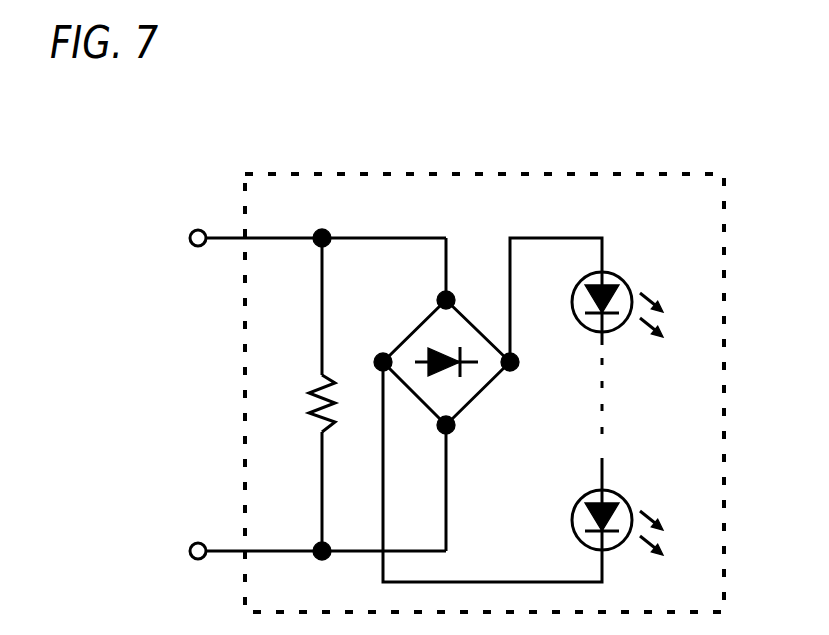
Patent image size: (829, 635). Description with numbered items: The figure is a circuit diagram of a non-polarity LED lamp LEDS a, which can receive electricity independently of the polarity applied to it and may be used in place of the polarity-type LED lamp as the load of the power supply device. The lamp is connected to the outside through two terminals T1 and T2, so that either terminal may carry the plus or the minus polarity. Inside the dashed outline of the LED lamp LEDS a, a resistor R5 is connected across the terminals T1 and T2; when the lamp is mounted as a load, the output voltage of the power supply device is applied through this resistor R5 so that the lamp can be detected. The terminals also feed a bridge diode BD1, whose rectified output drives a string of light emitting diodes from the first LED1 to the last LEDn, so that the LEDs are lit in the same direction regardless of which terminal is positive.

The first terminal T1 is at (295, 227).
The second terminal T2 is at (298, 563).
The resistor R5 is at (300, 394).
The bridge diode BD1 is at (443, 394).
The first light emitting diode LED1 is at (631, 288).
The n-th light emitting diode LEDn is at (628, 510).
The LED lamp LEDS a is at (484, 378).